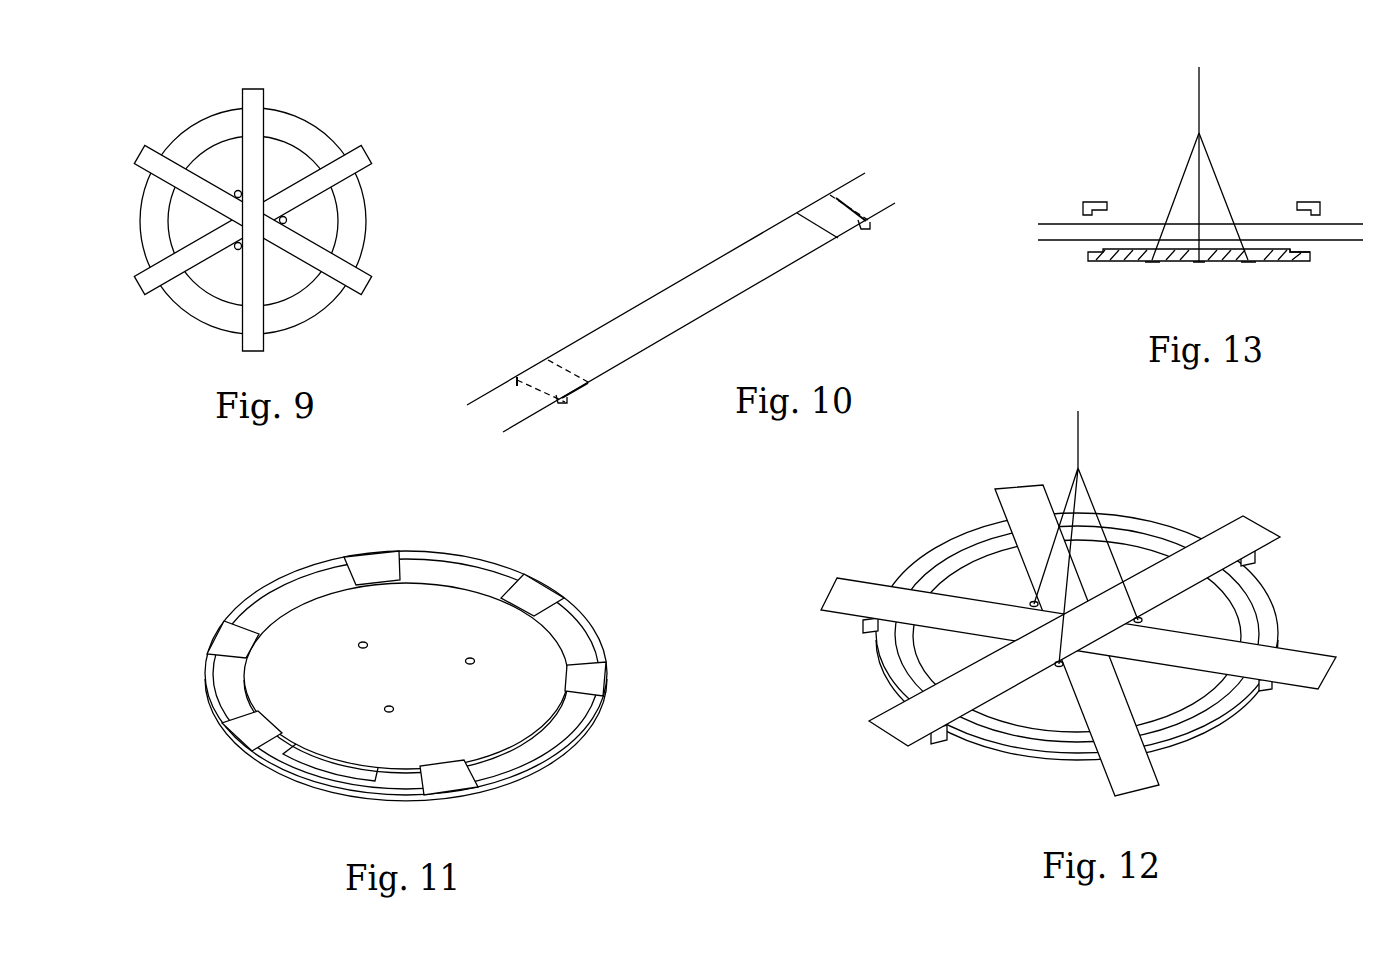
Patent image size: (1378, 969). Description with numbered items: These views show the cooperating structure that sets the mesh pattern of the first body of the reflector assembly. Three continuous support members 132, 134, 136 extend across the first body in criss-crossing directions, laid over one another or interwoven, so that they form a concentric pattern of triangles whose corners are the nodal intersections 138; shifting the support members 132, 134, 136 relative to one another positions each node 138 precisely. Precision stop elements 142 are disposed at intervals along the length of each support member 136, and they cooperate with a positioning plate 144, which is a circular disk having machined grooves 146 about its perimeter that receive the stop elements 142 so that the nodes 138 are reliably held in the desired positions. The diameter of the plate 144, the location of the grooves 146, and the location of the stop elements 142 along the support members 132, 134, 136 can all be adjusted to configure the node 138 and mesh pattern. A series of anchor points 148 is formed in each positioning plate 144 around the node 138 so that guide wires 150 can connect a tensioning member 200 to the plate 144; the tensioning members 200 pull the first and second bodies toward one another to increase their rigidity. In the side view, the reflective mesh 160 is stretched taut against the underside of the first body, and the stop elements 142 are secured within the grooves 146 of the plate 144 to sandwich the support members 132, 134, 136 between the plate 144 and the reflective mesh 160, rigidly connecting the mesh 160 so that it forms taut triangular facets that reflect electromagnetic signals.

In FIG. 9, the continuous support member 132 is at (147, 158).
In FIG. 12, the continuous support member 132 is at (1147, 774).
In FIG. 9, the continuous support member 134 is at (255, 90).
In FIG. 12, the continuous support member 134 is at (999, 689).
In FIG. 9, the continuous support member 136 is at (357, 158).
In FIG. 10, the continuous support member 136 is at (725, 255).
In FIG. 13, the continuous support member 136 is at (1057, 224).
In FIG. 12, the continuous support member 136 is at (1302, 678).
In FIG. 9, the nodal intersection 138 is at (262, 215).
In FIG. 12, the nodal intersection 138 is at (1102, 630).
In FIG. 10, the precision stop element 142 is at (562, 407).
In FIG. 13, the precision stop element 142 is at (1308, 202).
In FIG. 9, the positioning plate 144 is at (360, 220).
In FIG. 13, the positioning plate 144 is at (1115, 261).
In FIG. 11, the positioning plate 144 is at (535, 742).
In FIG. 12, the positioning plate 144 is at (1268, 608).
In FIG. 13, the machined groove 146 is at (1307, 252).
In FIG. 11, the machined groove 146 is at (447, 777).
In FIG. 13, the anchor point 148 is at (1157, 266).
In FIG. 11, the anchor point 148 is at (469, 658).
In FIG. 12, the anchor point 148 is at (1154, 617).
In FIG. 13, the guide wire 150 is at (1180, 185).
In FIG. 12, the guide wire 150 is at (1072, 573).
In FIG. 13, the reflective mesh 160 is at (1053, 242).
In FIG. 13, the tensioning member 200 is at (1200, 93).
In FIG. 12, the tensioning member 200 is at (1079, 437).